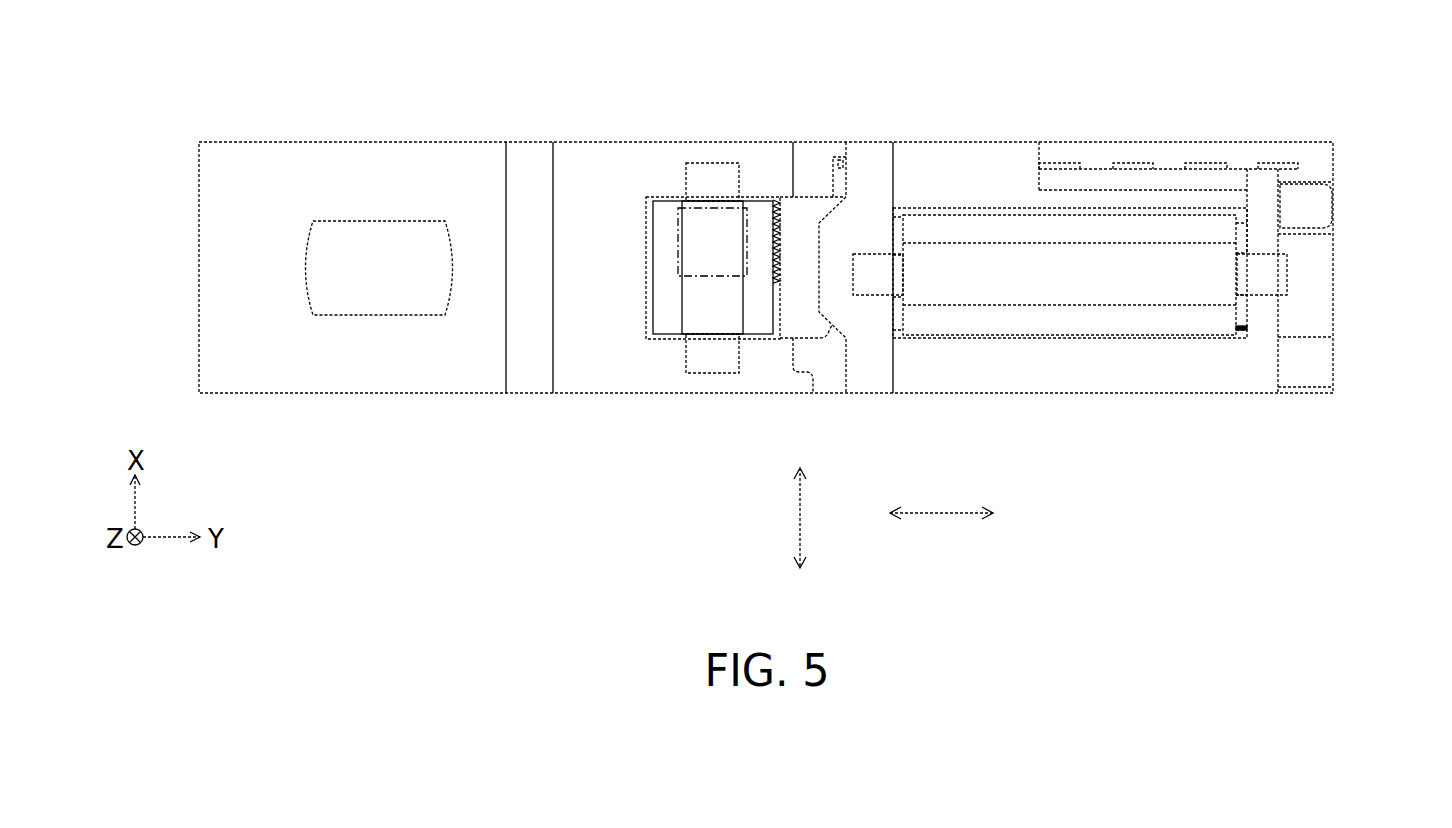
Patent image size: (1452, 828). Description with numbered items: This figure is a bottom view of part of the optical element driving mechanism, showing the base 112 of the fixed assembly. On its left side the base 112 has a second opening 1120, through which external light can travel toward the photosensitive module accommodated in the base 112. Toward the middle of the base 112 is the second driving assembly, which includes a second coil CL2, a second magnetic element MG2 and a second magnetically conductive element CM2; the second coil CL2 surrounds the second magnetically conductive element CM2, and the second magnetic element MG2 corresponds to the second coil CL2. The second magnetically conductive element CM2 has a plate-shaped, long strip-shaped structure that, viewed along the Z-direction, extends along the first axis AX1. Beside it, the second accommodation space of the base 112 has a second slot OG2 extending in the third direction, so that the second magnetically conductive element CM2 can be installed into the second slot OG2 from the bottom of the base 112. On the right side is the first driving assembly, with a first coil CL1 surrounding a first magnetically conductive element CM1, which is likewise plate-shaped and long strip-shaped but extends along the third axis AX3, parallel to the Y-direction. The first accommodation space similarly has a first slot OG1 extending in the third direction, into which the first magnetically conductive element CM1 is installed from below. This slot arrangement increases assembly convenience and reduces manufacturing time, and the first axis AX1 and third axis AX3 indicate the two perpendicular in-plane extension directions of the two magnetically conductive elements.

The base 112 is at (601, 163).
The second opening 1120 is at (381, 221).
The second coil CL2 is at (667, 313).
The second magnetically conductive element CM2 is at (712, 175).
The second magnetic element MG2 is at (678, 222).
The second slot OG2 is at (750, 196).
The first coil CL1 is at (1093, 282).
The first slot OG1 is at (1245, 217).
The first magnetically conductive element CM1 is at (1272, 277).
The first axis AX1 is at (798, 504).
The third axis AX3 is at (972, 513).